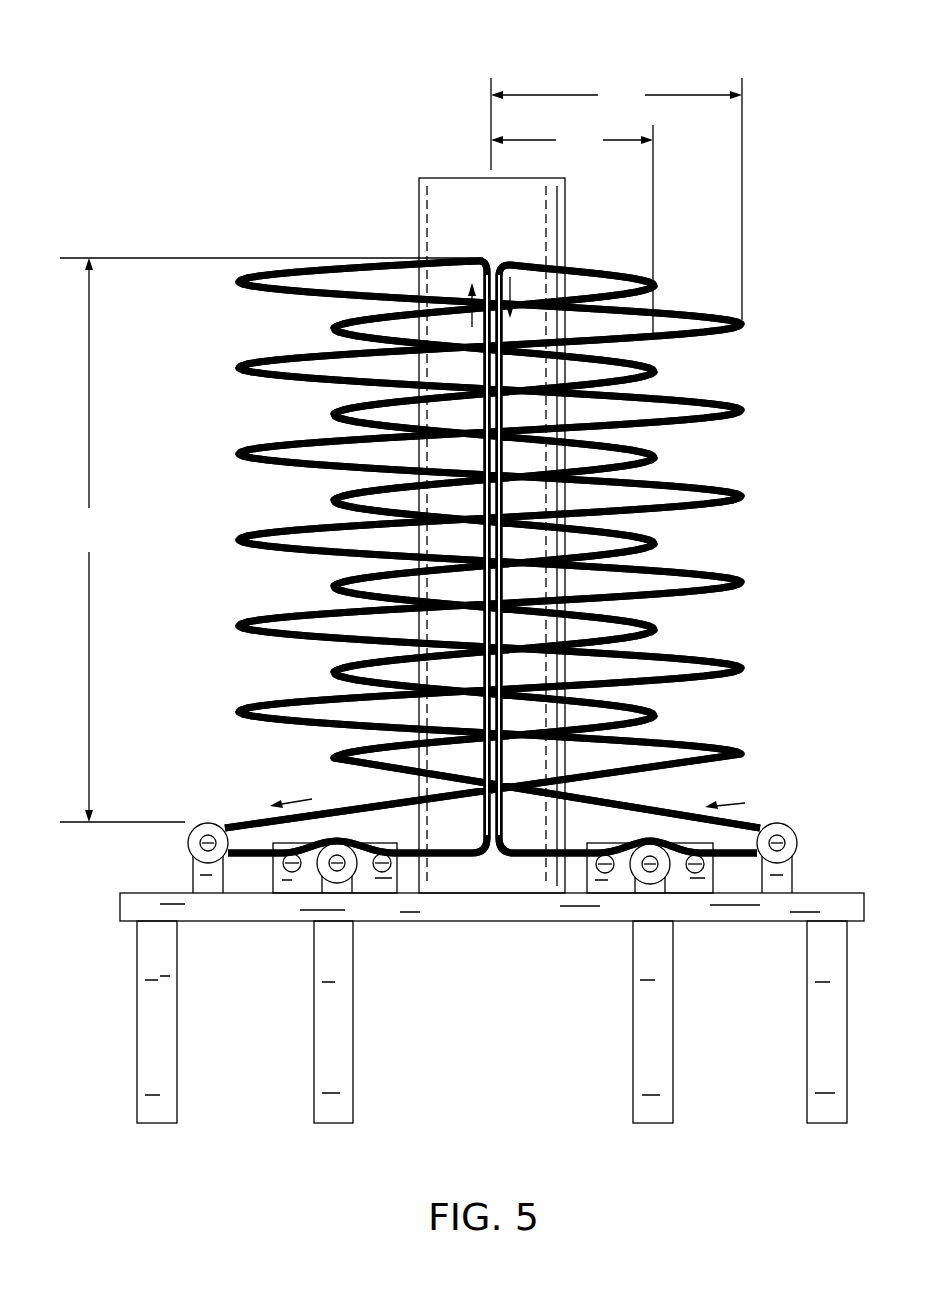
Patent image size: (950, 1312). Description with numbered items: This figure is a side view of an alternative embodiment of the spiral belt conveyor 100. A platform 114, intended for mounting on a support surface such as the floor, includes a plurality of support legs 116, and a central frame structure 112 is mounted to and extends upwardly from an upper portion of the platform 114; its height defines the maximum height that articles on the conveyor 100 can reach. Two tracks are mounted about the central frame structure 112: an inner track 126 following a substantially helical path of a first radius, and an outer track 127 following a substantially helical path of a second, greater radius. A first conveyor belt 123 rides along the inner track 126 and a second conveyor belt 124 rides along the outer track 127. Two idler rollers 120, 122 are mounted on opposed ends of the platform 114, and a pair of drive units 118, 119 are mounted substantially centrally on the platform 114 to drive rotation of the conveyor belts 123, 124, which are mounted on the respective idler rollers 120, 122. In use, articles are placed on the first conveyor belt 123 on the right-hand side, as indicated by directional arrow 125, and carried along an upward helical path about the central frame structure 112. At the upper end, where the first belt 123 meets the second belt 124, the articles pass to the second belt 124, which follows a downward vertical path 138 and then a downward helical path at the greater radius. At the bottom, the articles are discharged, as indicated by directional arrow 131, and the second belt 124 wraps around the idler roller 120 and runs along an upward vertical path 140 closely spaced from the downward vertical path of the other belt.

The spiral belt conveyor 100 is at (85, 70).
The central frame structure 112 is at (440, 178).
The platform 114 is at (550, 957).
The support legs 116 is at (314, 1063).
The drive unit 118 is at (662, 873).
The drive unit 119 is at (345, 872).
The idler roller 120 is at (206, 823).
The idler roller 122 is at (794, 832).
The first conveyor belt 123 is at (733, 855).
The second conveyor belt 124 is at (272, 860).
The directional arrow 125 is at (743, 802).
The inner track 126 is at (648, 548).
The outer track 127 is at (247, 634).
The directional arrow 131 is at (292, 797).
The downward vertical path 138 is at (497, 260).
The upward vertical path 140 is at (468, 312).